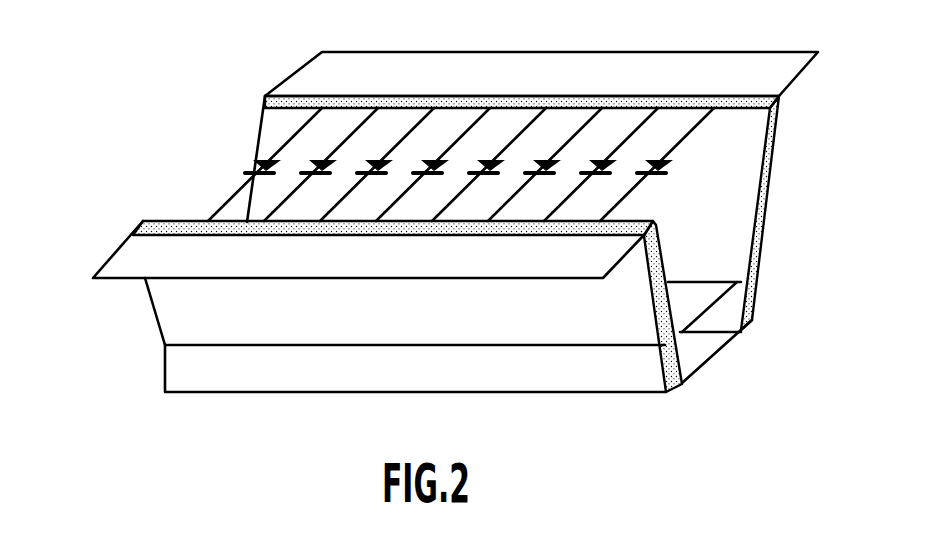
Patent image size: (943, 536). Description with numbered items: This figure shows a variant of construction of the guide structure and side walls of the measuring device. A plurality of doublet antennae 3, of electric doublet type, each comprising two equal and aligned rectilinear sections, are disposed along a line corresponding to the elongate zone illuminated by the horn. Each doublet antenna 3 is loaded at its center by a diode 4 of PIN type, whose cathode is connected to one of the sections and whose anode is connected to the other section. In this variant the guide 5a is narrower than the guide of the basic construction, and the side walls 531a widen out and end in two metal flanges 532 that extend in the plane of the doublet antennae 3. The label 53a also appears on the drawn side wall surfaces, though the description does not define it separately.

The doublet antennae 3 is at (569, 128).
The diode 4 is at (532, 167).
The metal flanges 532 is at (130, 260).
The side wall 53a is at (175, 308).
The side walls 531a is at (760, 206).
The guide 5a is at (673, 293).